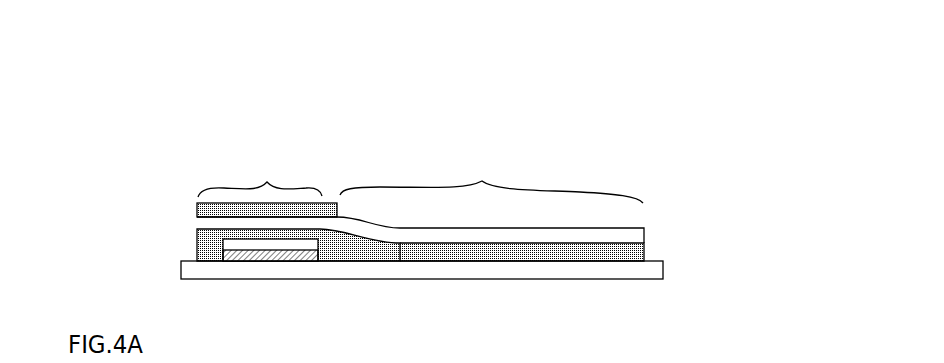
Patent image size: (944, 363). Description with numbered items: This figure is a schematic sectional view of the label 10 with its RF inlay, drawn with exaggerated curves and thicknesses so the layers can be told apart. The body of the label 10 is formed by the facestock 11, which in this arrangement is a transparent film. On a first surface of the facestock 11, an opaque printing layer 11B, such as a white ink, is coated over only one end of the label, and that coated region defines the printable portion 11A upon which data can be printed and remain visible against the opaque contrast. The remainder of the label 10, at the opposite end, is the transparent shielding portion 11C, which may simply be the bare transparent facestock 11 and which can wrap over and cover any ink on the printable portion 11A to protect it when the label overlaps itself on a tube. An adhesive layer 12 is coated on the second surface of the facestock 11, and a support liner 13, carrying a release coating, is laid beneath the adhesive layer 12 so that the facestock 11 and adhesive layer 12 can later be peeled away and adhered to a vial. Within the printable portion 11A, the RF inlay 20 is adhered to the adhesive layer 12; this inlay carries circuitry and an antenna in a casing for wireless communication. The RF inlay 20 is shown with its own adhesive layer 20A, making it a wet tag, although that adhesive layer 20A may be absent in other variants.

The label 10 is at (720, 199).
The facestock 11 is at (556, 237).
The printable portion 11A is at (274, 165).
The printing layer 11B is at (320, 205).
The transparent shielding portion 11C is at (489, 160).
The adhesive layer 12 is at (597, 248).
The support liner 13 is at (498, 268).
The RF inlay 20 is at (233, 245).
The adhesive layer of RF inlay 20A is at (268, 261).